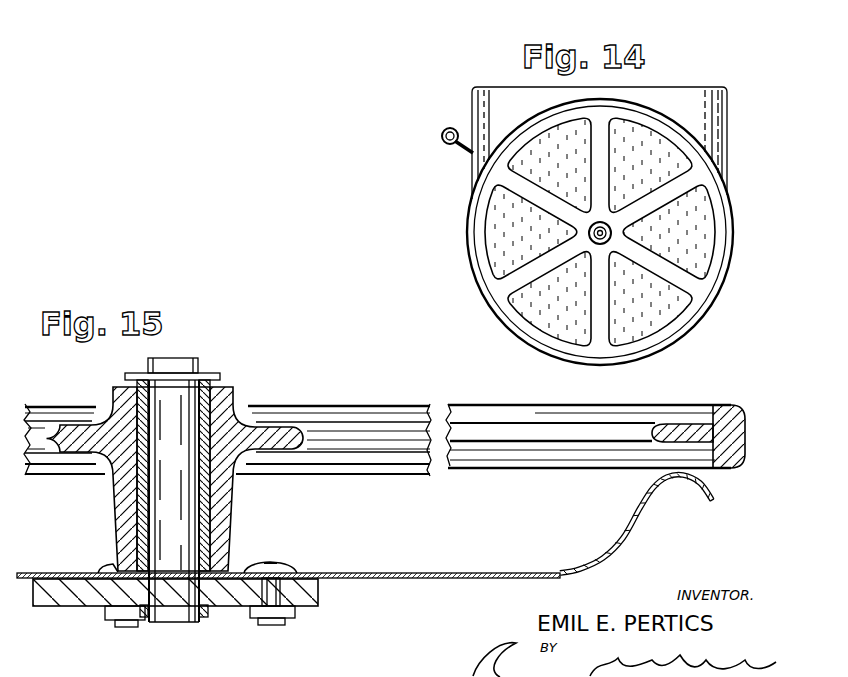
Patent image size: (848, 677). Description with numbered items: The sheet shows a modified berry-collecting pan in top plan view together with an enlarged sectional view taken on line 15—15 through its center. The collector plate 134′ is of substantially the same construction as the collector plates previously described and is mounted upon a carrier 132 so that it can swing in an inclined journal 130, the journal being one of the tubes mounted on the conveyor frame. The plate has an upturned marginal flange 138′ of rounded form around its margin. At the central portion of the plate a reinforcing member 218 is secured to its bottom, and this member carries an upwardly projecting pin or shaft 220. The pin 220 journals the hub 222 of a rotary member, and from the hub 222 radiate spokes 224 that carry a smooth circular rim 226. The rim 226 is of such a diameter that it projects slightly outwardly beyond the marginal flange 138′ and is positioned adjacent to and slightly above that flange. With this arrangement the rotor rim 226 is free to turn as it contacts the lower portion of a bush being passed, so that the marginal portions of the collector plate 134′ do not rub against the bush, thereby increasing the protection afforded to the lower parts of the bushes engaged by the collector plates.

In FIG. 14, the inclined journal tube 130 is at (441, 136).
In FIG. 14, the carrier 132 is at (461, 151).
In FIG. 14, the collector plate 134′ is at (683, 102).
In FIG. 15, the collector plate 134′ is at (387, 580).
In FIG. 14, the upturned marginal flange 138′ is at (718, 150).
In FIG. 15, the upturned marginal flange 138′ is at (660, 489).
In FIG. 14, the section line 15 is at (515, 211).
In FIG. 15, the reinforcing member 218 is at (312, 596).
In FIG. 14, the pin or shaft 220 is at (609, 222).
In FIG. 15, the pin or shaft 220 is at (172, 607).
In FIG. 14, the hub 222 is at (588, 216).
In FIG. 15, the hub 222 is at (232, 388).
In FIG. 14, the spokes 224 is at (667, 274).
In FIG. 15, the spokes 224 is at (353, 430).
In FIG. 14, the circular rim 226 is at (703, 297).
In FIG. 15, the circular rim 226 is at (733, 425).